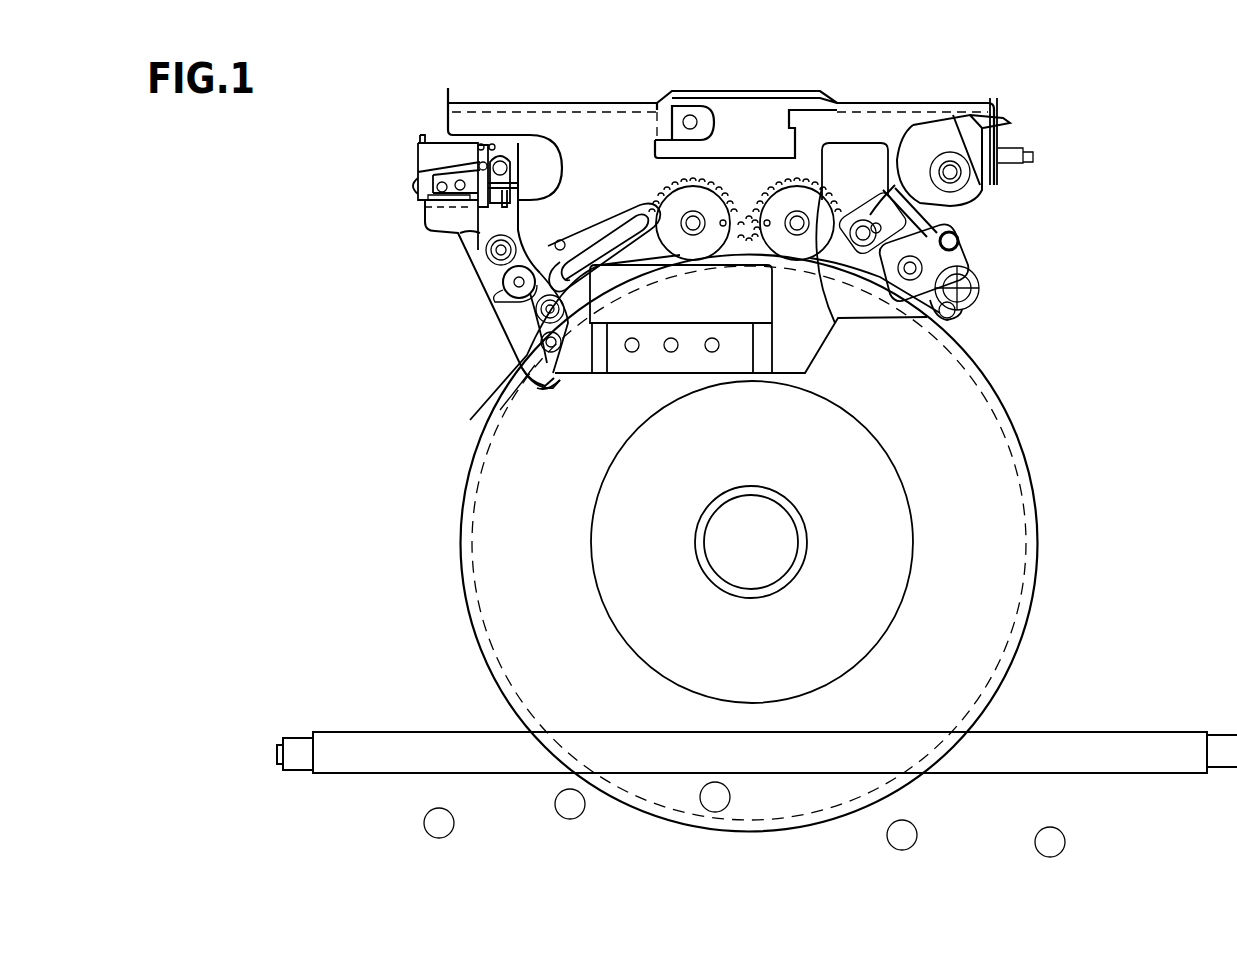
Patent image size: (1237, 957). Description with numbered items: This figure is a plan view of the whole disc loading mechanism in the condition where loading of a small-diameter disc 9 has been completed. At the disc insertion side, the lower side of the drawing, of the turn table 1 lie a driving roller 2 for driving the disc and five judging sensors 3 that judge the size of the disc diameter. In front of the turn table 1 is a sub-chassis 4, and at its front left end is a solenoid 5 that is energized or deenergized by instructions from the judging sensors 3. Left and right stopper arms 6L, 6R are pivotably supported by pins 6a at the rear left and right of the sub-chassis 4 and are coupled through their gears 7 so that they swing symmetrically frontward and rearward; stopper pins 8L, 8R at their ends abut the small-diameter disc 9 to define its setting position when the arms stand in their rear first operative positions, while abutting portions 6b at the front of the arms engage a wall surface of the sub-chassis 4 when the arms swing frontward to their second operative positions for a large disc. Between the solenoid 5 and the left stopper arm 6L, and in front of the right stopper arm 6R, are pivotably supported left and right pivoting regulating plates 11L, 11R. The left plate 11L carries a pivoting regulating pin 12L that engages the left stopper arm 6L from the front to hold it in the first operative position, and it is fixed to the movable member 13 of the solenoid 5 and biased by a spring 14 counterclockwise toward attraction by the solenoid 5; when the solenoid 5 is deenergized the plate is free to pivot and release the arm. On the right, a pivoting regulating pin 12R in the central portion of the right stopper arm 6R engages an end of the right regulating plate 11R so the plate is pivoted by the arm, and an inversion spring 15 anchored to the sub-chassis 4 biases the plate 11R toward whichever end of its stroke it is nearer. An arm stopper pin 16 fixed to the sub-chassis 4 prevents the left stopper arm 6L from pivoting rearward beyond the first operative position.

The turn table 1 is at (786, 540).
The driving roller 2 is at (1105, 760).
The judging sensors 3 is at (903, 838).
The sub-chassis 4 is at (568, 118).
The solenoid 5 is at (418, 176).
The pins 6a is at (695, 235).
The abutting portions 6b is at (560, 245).
The left stopper arm 6L is at (533, 312).
The right stopper arm 6R is at (965, 320).
The gears 7 is at (760, 185).
The left stopper pin 8L is at (540, 340).
The right stopper pin 8R is at (985, 280).
The small-diameter disc 9 is at (1012, 485).
The left pivoting regulating plate 11L is at (465, 235).
The right pivoting regulating plate 11R is at (942, 125).
The pivoting regulating pin 12L is at (500, 283).
The pivoting regulating pin 12R is at (965, 212).
The movable member 13 is at (478, 185).
The spring 14 is at (428, 196).
The inversion spring 15 is at (980, 292).
The arm stopper pin 16 is at (520, 385).